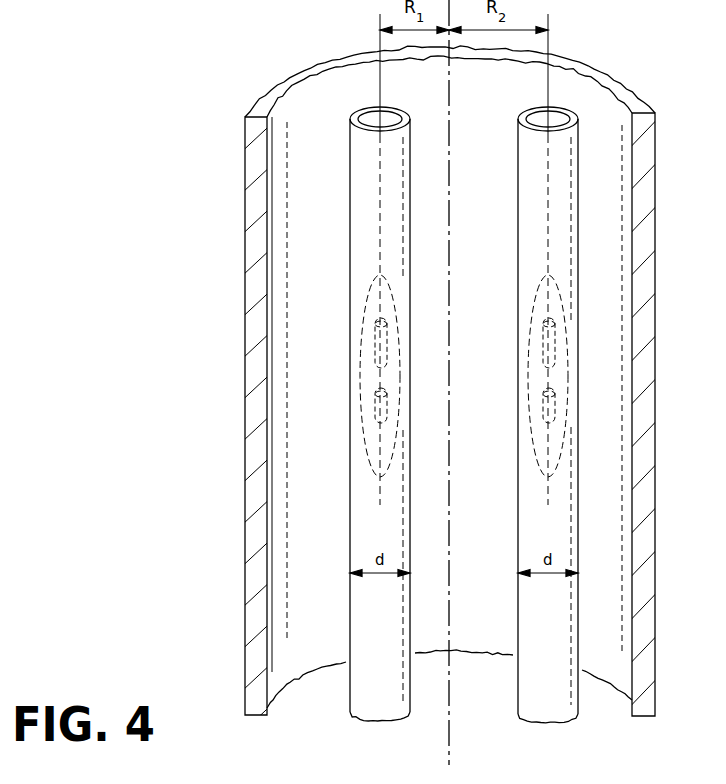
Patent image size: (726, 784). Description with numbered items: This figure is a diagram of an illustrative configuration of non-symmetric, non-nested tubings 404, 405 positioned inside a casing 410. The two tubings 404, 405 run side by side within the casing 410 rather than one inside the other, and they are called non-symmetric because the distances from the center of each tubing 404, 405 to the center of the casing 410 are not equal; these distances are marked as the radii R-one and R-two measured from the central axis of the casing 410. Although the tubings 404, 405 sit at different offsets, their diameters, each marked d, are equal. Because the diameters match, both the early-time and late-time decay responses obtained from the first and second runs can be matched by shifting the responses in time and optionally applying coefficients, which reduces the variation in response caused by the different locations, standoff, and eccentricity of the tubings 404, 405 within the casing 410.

The casing 410 is at (246, 249).
The tubing 404 is at (348, 692).
The tubing 405 is at (580, 705).